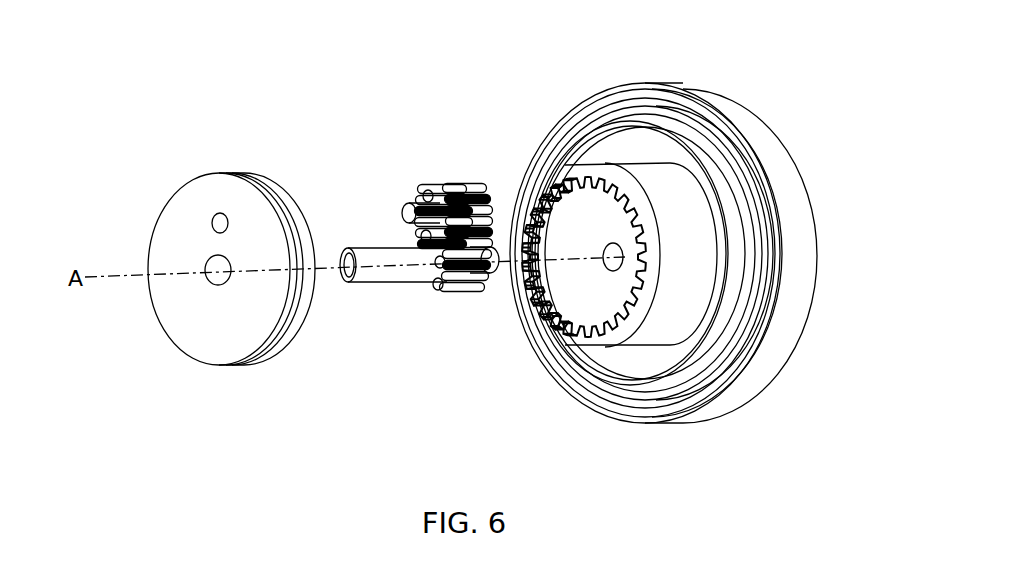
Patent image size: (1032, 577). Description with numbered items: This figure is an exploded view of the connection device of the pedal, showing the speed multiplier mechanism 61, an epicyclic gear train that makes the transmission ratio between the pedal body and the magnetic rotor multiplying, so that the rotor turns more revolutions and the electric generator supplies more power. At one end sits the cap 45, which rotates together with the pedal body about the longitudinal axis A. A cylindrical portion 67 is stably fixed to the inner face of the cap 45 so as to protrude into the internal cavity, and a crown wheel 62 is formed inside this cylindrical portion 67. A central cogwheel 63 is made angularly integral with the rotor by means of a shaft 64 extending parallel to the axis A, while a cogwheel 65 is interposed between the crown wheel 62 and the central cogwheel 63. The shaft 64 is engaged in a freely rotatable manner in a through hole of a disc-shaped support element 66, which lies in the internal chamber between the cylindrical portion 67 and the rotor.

The cap 45 is at (777, 143).
The speed multiplier mechanism 61 is at (398, 190).
The crown wheel 62 is at (613, 203).
The central cogwheel 63 is at (448, 287).
The shaft 64 is at (377, 287).
The cogwheel 65 is at (448, 185).
The disc-shaped support element 66 is at (202, 178).
The cylindrical portion 67 is at (687, 247).